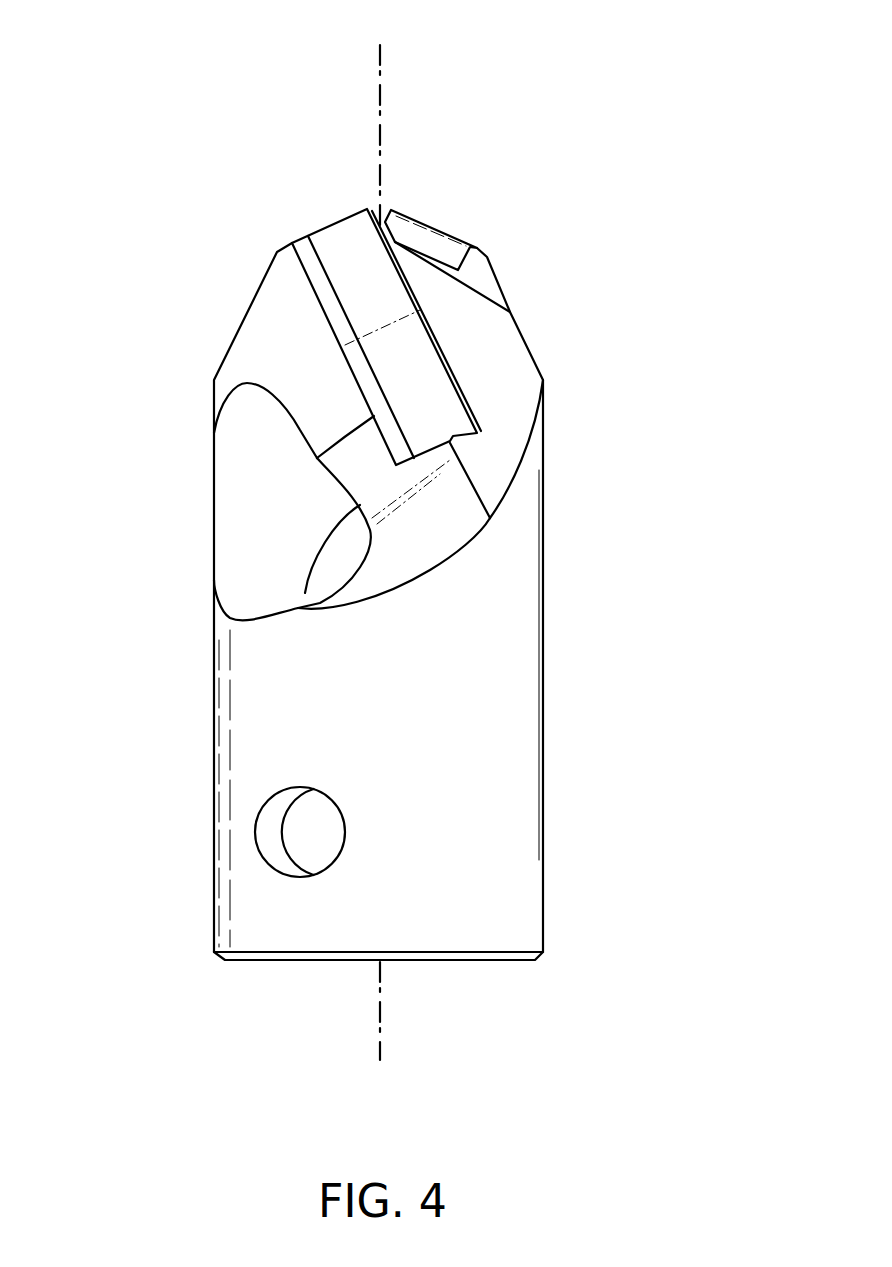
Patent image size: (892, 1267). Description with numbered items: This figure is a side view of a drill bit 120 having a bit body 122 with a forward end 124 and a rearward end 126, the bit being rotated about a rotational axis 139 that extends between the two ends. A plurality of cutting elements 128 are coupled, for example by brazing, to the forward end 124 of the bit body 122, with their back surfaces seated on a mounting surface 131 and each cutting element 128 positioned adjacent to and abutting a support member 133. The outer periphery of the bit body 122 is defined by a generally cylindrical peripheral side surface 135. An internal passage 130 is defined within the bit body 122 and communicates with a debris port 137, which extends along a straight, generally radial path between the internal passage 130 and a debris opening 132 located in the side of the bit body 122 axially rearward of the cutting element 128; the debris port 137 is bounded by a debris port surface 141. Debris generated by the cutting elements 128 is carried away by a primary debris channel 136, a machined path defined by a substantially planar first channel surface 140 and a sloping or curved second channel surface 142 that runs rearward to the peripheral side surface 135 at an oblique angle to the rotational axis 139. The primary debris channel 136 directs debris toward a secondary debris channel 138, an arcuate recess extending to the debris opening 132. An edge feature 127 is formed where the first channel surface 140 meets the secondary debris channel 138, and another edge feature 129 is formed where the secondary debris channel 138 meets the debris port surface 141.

The drill bit 120 is at (178, 106).
The bit body 122 is at (232, 665).
The forward end 124 is at (422, 172).
The rearward end 126 is at (331, 989).
The edge feature 127 is at (470, 463).
The cutting element 128 is at (323, 227).
The edge feature 129 is at (335, 575).
The internal passage 130 is at (332, 552).
The mounting surface 131 is at (372, 395).
The debris opening 132 is at (220, 622).
The support member 133 is at (440, 460).
The peripheral side surface 135 is at (505, 628).
The primary debris channel 136 is at (517, 457).
The debris port 137 is at (236, 492).
The secondary debris channel 138 is at (375, 477).
The rotational axis 139 is at (387, 1008).
The first channel surface 140 is at (477, 487).
The debris port surface 141 is at (270, 510).
The second channel surface 142 is at (500, 423).